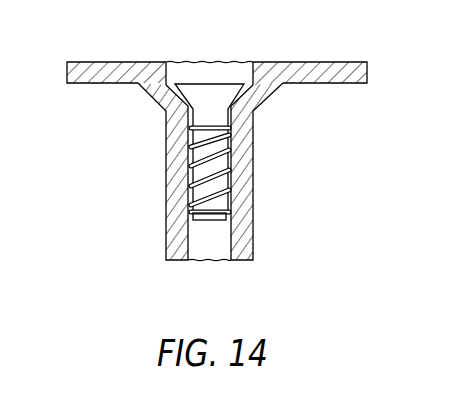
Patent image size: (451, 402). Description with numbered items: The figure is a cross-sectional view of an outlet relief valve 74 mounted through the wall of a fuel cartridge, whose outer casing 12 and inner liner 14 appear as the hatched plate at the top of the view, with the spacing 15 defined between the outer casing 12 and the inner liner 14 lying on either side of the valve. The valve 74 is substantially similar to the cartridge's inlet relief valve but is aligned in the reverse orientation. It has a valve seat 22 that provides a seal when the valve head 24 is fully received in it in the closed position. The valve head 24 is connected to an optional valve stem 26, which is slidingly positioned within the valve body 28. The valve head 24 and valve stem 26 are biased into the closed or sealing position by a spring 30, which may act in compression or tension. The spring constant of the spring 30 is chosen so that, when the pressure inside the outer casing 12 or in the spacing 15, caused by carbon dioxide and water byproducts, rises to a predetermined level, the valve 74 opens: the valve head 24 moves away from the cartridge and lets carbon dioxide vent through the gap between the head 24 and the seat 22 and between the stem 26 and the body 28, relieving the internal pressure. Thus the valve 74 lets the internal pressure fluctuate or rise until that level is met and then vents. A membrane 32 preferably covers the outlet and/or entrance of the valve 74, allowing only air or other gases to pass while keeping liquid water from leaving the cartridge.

The outer casing 12 is at (237, 57).
The inner liner 14 is at (330, 68).
The spacing 15 is at (113, 226).
The valve seat 22 is at (213, 171).
The valve head 24 is at (162, 107).
The valve stem 26 is at (212, 147).
The valve body 28 is at (176, 154).
The spring 30 is at (211, 201).
The membrane 32 is at (216, 61).
The outlet relief valve 74 is at (352, 144).